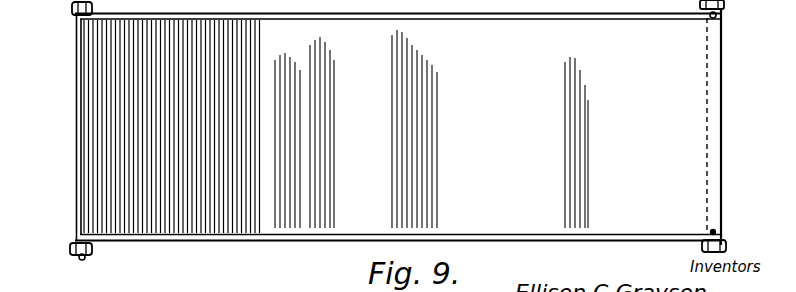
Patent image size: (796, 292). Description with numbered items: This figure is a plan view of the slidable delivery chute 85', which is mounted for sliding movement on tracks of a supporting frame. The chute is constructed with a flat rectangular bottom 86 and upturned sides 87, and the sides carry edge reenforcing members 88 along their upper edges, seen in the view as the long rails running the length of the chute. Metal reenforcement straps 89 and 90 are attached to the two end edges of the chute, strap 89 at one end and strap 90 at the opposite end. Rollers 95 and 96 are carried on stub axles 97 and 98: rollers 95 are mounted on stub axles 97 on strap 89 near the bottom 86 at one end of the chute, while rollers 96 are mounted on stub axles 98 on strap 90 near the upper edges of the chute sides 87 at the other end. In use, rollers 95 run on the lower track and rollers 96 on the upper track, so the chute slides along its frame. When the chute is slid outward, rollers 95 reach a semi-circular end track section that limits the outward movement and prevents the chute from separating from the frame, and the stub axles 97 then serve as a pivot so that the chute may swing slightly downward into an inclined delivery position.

The delivery chute 85' is at (213, 144).
The flat rectangular bottom 86 is at (490, 129).
The upturned sides 87 is at (361, 17).
The edge reenforcing members 88 is at (557, 14).
The metal reenforcement strap 89 is at (77, 13).
The metal reenforcement strap 90 is at (727, 10).
The rollers 95 is at (94, 249).
The rollers 96 is at (724, 6).
The stub axles 97 is at (110, 0).
The stub axles 98 is at (714, 232).